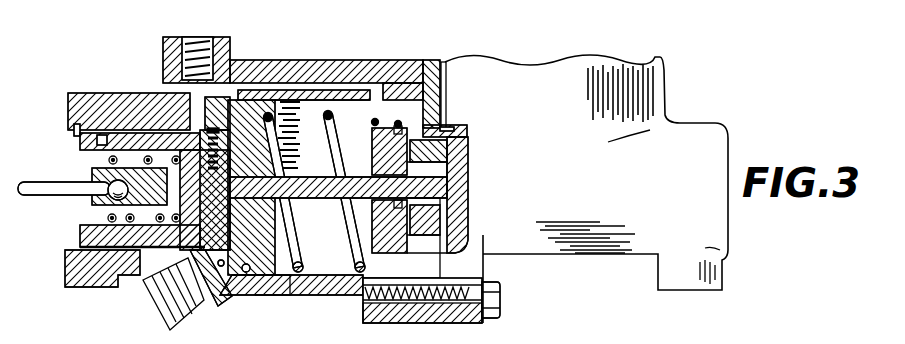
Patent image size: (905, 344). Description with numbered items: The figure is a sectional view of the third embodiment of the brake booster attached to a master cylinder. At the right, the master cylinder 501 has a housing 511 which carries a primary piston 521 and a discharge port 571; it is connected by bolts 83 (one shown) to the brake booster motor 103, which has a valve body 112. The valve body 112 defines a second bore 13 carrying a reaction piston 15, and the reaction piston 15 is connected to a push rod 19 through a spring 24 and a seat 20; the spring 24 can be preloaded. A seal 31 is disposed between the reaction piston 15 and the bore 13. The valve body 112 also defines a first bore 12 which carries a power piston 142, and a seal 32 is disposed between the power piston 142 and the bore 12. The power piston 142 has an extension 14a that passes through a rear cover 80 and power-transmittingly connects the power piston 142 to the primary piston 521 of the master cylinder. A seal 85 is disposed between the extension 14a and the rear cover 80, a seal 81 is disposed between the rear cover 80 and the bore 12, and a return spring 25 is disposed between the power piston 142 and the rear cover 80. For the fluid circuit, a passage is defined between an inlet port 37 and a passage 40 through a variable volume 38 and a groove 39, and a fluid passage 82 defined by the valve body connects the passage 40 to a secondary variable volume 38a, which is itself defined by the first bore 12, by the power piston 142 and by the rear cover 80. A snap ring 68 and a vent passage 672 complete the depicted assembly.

The first bore 12 is at (330, 273).
The second bore 13 is at (128, 140).
The extension 14a is at (296, 175).
The reaction piston 15 is at (85, 234).
The push rod 19 is at (53, 197).
The seat 20 is at (95, 165).
The spring 24 is at (110, 140).
The return spring 25 is at (332, 154).
The seal 31 is at (90, 274).
The seal 32 is at (247, 277).
The inlet port 37 is at (205, 302).
The variable volume 38 is at (221, 232).
The secondary variable volume 38a is at (328, 240).
The groove 39 is at (143, 278).
The passage 40 is at (164, 97).
The snap ring 68 is at (72, 131).
The rear cover 80 is at (437, 62).
The seal 81 is at (418, 100).
The fluid passage 82 is at (285, 95).
The bolts 83 is at (500, 288).
The seal 85 is at (385, 150).
The brake booster motor 103 is at (318, 56).
The valve body 112 is at (268, 288).
The power piston 142 is at (263, 92).
The master cylinder 501 is at (672, 83).
The housing 511 is at (642, 163).
The primary piston 521 is at (470, 176).
The discharge port 571 is at (694, 290).
The vent passage 672 is at (441, 62).